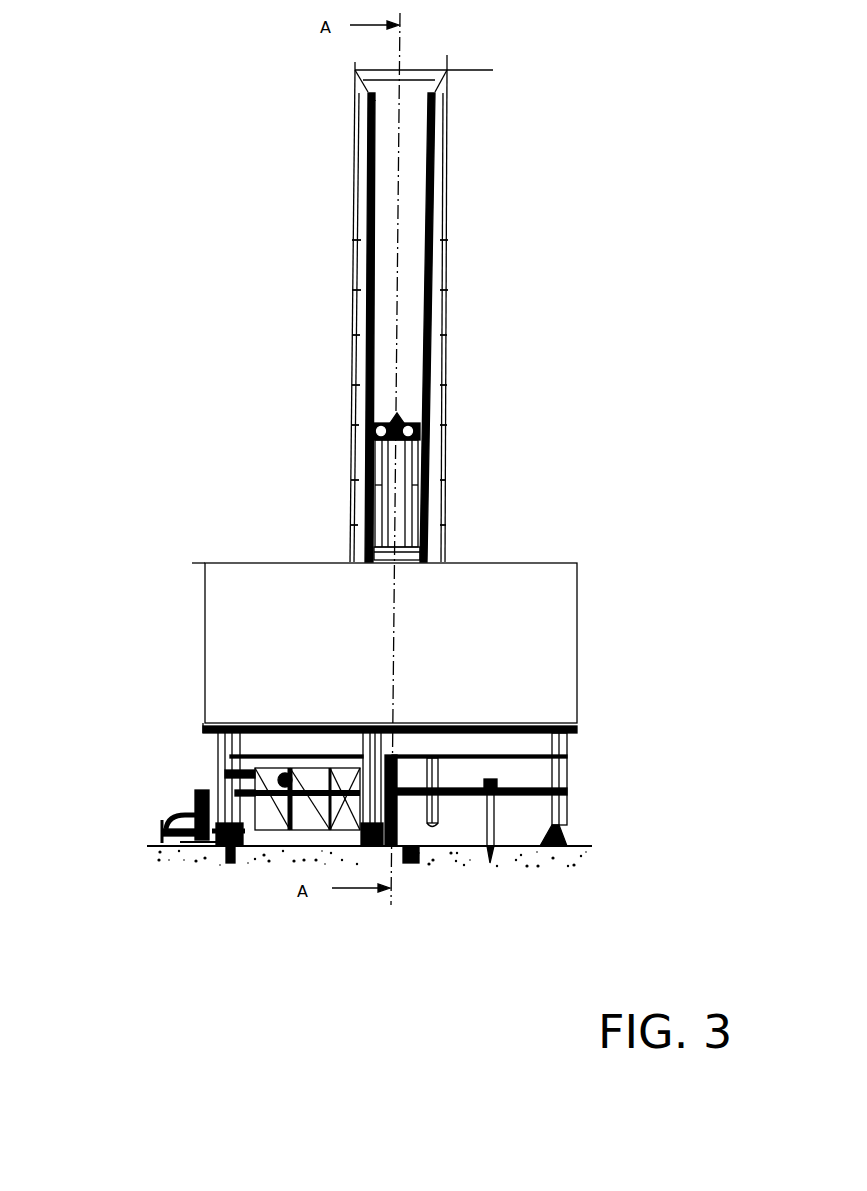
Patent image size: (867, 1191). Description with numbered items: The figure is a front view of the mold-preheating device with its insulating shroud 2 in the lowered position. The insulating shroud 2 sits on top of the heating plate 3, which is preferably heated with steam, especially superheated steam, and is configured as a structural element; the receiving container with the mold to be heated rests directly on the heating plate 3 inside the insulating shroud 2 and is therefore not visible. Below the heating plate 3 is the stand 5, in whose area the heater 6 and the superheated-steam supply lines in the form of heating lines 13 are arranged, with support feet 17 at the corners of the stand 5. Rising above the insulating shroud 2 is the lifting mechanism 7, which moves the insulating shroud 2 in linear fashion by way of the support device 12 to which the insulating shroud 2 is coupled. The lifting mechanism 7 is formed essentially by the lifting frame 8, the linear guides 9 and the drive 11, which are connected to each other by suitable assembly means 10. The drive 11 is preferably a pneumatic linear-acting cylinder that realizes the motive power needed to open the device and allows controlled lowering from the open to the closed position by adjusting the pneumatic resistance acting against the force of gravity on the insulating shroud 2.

The insulating shroud 2 is at (532, 632).
The heating plate 3 is at (445, 725).
The stand 5 is at (520, 748).
The heater 6 is at (193, 807).
The lifting mechanism 7 is at (510, 178).
The lifting frame 8 is at (408, 348).
The linear guides 9 is at (353, 395).
The assembly means 10 is at (353, 332).
The drive 11 is at (427, 424).
The support device 12 is at (400, 530).
The heating lines 13 is at (515, 797).
The support feet 17 is at (557, 800).